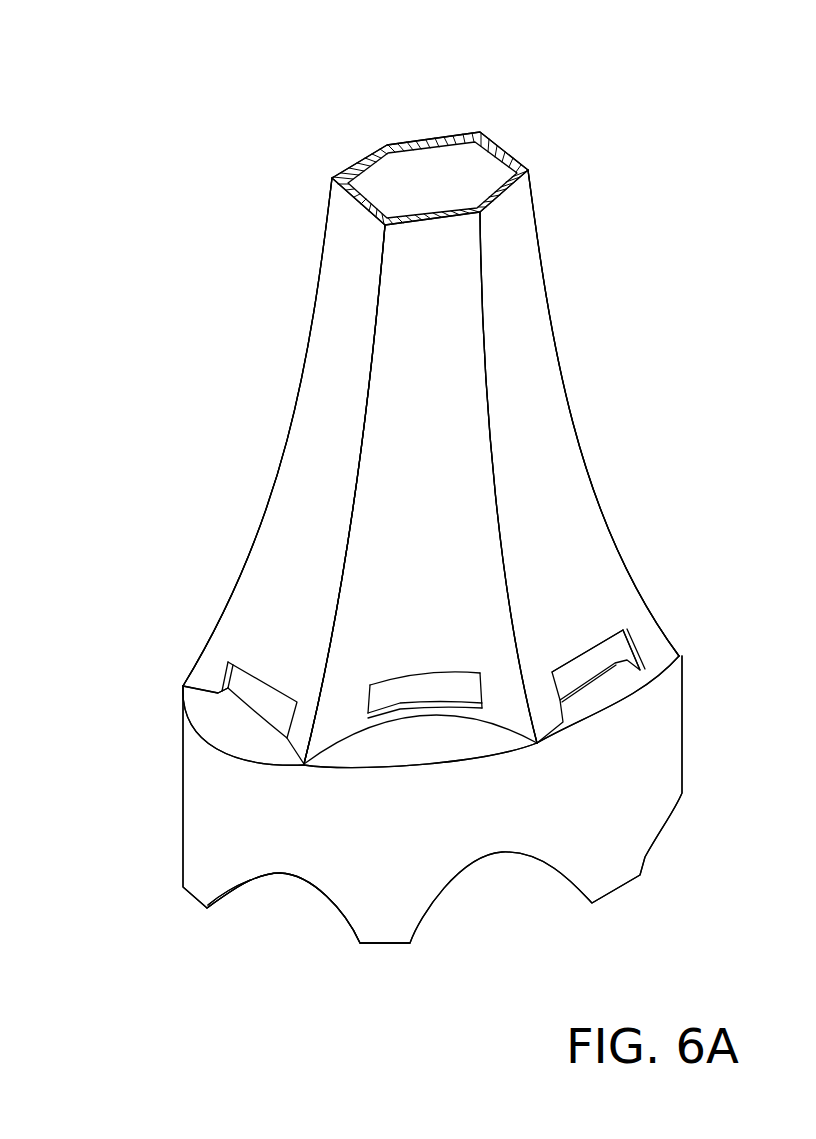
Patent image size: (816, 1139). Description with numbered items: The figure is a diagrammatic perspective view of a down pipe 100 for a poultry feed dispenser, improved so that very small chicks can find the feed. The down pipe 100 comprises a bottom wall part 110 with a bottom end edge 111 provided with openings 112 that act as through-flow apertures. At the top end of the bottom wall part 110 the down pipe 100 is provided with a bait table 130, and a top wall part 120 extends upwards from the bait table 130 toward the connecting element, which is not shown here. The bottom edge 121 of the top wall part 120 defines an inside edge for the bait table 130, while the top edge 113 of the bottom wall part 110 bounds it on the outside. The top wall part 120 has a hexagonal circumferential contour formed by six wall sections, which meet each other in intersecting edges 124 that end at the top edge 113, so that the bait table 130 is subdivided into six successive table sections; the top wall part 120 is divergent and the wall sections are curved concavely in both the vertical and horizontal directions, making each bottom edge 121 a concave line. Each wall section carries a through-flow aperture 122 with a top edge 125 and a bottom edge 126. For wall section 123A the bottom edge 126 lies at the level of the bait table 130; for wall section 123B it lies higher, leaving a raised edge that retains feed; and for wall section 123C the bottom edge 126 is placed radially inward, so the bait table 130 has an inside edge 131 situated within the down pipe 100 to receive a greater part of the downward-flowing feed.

The down pipe 100 is at (627, 80).
The bottom wall part 110 is at (210, 832).
The bottom end edge 111 is at (375, 948).
The openings 112 is at (277, 903).
The top edge 113 is at (203, 744).
The top wall part 120 is at (535, 212).
The bottom edge 121 is at (660, 665).
The through-flow apertures 122 is at (610, 648).
The wall section 123A is at (332, 383).
The wall section 123B is at (417, 317).
The wall section 123C is at (535, 343).
The intersecting edges 124 is at (373, 357).
The top edge 125 is at (450, 672).
The bottom edge 126 is at (397, 702).
The bait table 130 is at (207, 720).
The inside edge 131 is at (560, 668).